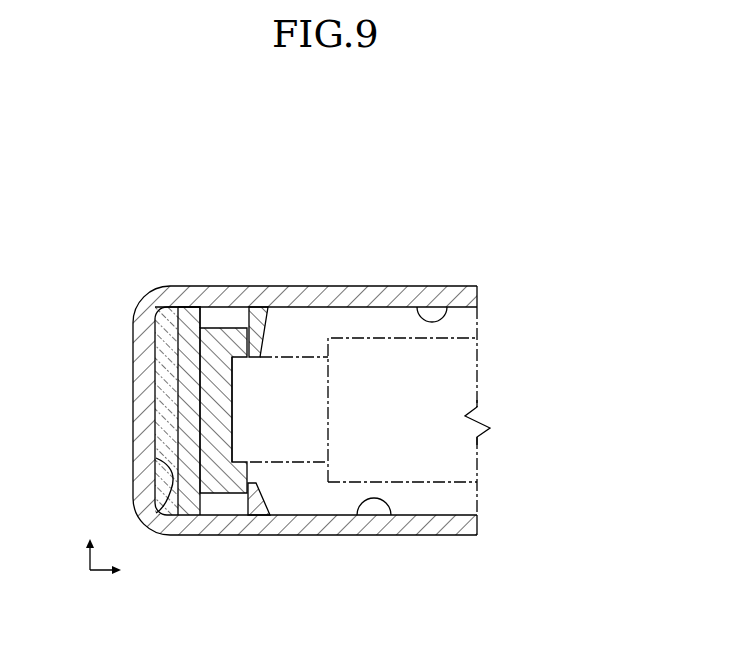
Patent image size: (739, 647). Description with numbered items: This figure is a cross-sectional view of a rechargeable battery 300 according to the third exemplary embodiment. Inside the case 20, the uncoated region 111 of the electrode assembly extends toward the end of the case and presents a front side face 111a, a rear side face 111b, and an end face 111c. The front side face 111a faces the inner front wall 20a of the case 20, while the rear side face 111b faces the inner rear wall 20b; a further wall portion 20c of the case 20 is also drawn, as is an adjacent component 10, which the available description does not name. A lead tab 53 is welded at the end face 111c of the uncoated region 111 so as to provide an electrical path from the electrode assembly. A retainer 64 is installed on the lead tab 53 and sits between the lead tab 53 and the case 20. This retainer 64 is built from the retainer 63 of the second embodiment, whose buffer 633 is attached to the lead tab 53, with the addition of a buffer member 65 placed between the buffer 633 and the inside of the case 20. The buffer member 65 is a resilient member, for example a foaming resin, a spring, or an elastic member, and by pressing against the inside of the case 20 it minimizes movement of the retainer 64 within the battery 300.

The rechargeable battery 300 is at (335, 162).
The display panel 10 is at (452, 370).
The case 20 is at (387, 299).
The inner front wall 20a is at (390, 513).
The inner rear wall 20b is at (447, 307).
The side protrusion of housing 20c is at (153, 460).
The lead tab 53 is at (227, 510).
The retainer 63 is at (160, 367).
The retainer 64 is at (123, 411).
The buffer member 65 is at (166, 413).
The buffer 633 is at (203, 338).
The uncoated region 111 is at (298, 382).
The front side face 111a is at (305, 463).
The rear side face 111b is at (258, 340).
The end face 111c is at (229, 433).